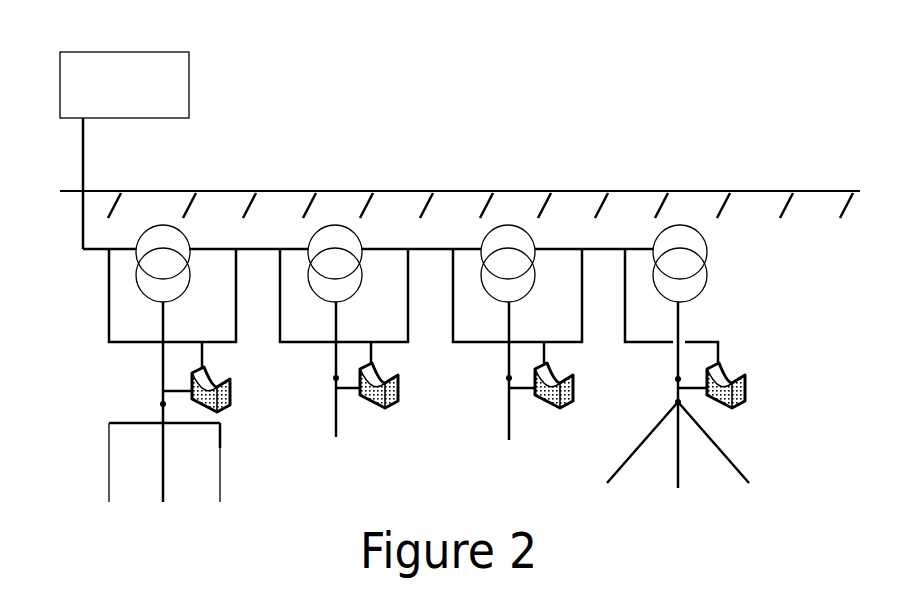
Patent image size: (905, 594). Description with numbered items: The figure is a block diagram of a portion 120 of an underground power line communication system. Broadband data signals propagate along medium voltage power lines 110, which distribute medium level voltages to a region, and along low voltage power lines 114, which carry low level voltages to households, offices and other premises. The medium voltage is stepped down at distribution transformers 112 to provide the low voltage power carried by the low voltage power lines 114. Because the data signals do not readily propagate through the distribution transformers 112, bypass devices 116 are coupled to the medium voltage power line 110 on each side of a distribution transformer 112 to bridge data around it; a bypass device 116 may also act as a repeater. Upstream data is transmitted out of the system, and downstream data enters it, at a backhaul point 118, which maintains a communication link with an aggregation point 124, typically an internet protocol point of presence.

The medium voltage power line 110 is at (83, 177).
The distribution transformer 112 is at (327, 227).
The low voltage power line 114 is at (109, 440).
The bypass device 116 is at (203, 368).
The backhaul point 118 is at (127, 43).
The portion of an underground power line communication system 120 is at (422, 106).
The aggregation point 124 is at (705, 283).